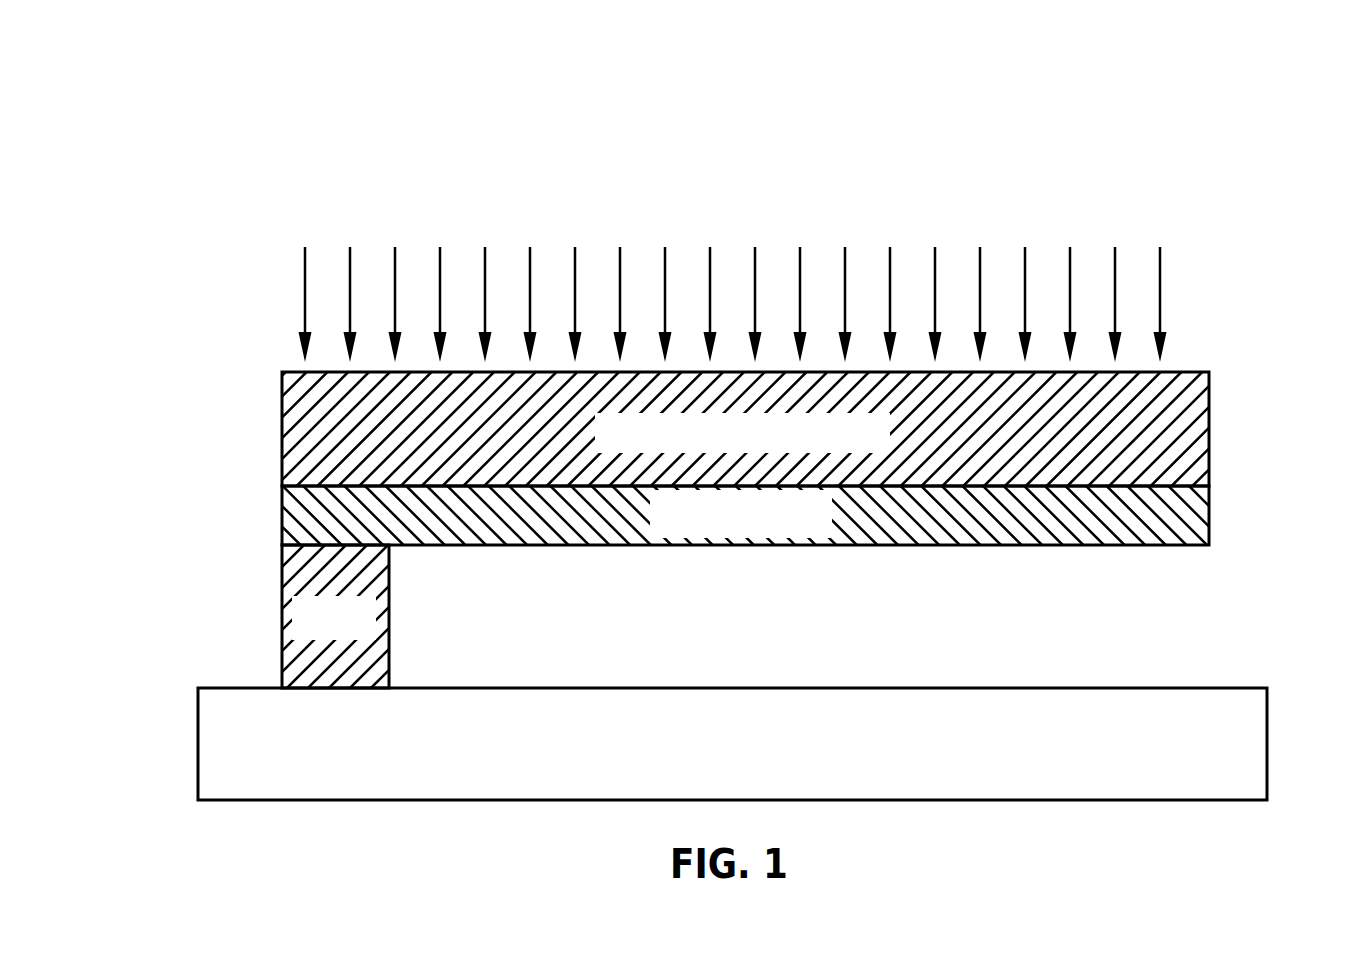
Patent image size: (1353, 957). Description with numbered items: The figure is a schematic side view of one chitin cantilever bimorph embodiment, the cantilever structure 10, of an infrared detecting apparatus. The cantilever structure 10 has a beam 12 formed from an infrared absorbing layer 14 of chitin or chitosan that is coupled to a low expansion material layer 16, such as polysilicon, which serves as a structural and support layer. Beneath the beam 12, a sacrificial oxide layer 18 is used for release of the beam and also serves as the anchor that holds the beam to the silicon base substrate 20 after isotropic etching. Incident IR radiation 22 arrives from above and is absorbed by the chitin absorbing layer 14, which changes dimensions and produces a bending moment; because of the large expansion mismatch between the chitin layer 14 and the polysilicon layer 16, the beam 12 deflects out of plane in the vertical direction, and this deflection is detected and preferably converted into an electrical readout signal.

The cantilever structure 10 is at (702, 430).
The beam 12 is at (739, 463).
The infrared absorbing layer 14 is at (1210, 418).
The low expansion material layer 16 is at (1210, 518).
The sacrificial oxide layer 18 is at (282, 648).
The silicon base substrate 20 is at (1268, 775).
The incident IR radiation 22 is at (305, 292).